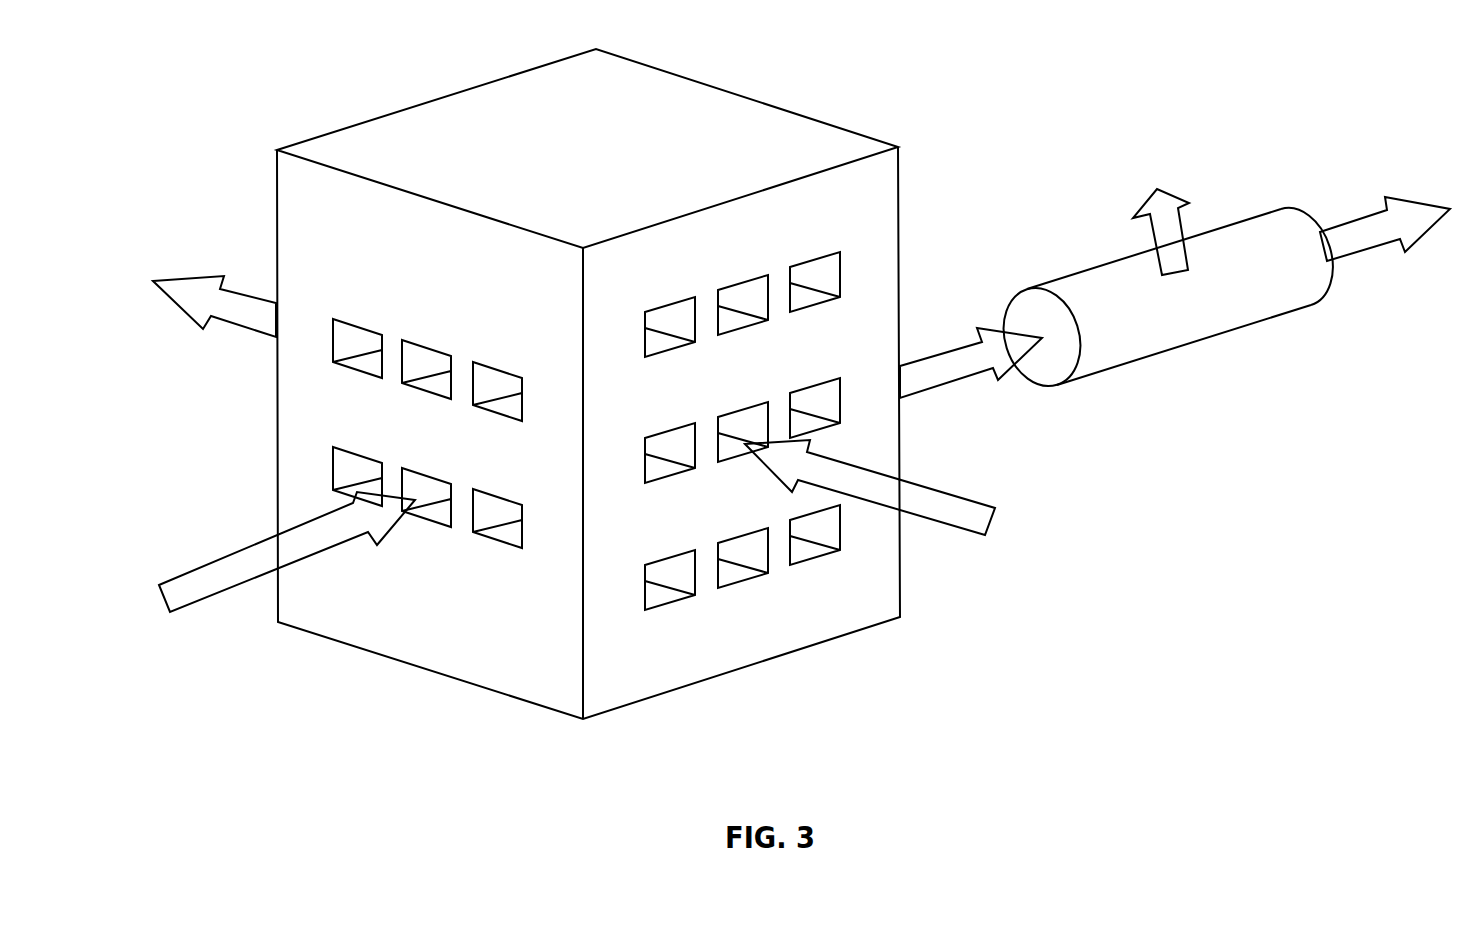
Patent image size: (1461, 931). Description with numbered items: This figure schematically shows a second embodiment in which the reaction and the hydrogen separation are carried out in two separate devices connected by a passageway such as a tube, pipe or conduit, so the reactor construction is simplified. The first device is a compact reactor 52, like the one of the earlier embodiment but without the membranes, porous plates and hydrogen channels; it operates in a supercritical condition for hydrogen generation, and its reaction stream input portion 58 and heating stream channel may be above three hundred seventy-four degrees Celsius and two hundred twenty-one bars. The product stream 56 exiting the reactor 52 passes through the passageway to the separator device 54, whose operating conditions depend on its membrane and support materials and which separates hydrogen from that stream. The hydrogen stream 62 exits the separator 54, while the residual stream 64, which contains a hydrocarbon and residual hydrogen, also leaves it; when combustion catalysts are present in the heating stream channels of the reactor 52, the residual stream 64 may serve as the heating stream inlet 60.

The compact reactor 52 is at (747, 667).
The separator device 54 is at (1172, 350).
The product stream 56 is at (950, 383).
The reaction stream input portion 58 is at (212, 560).
The heating stream inlet 60 is at (953, 528).
The hydrogen stream 62 is at (1180, 212).
The residual stream 64 is at (1362, 256).